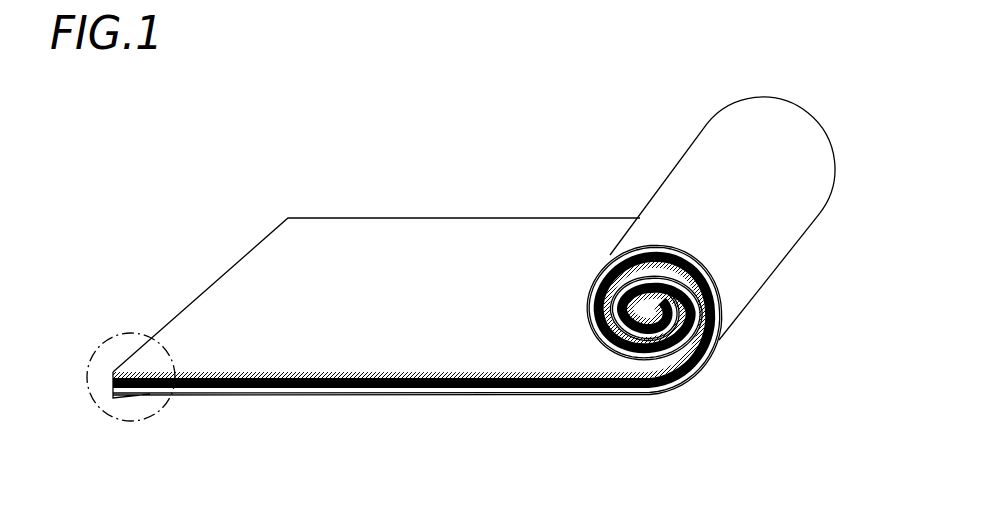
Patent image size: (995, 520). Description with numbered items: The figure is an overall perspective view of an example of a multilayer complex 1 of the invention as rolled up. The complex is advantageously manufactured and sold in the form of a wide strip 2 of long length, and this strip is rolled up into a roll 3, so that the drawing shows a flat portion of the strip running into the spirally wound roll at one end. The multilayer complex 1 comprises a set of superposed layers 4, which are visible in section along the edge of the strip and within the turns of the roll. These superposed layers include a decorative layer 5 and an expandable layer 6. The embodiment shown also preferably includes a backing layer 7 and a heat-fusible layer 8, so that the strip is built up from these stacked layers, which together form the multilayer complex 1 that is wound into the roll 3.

The multilayer complex 1 is at (326, 163).
The wide strip 2 is at (417, 243).
The roll 3 is at (712, 160).
The set of superposed layers 4 is at (417, 367).
The decorative layer 5 is at (270, 397).
The expandable layer 6 is at (367, 383).
The backing layer 7 is at (472, 397).
The heat-fusible layer 8 is at (232, 375).